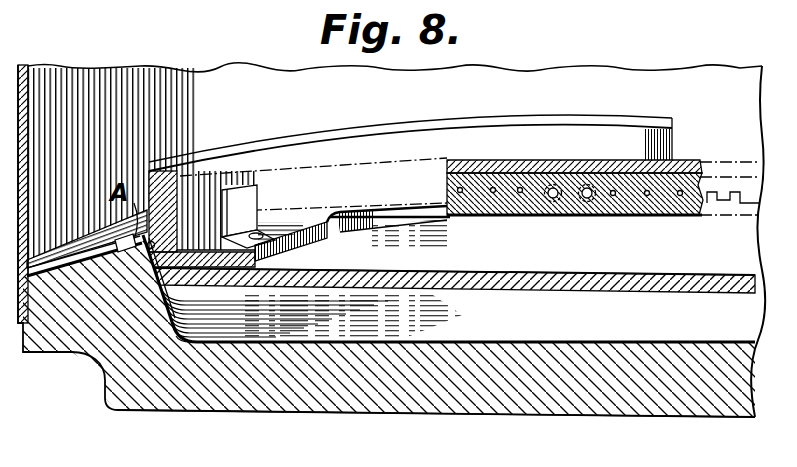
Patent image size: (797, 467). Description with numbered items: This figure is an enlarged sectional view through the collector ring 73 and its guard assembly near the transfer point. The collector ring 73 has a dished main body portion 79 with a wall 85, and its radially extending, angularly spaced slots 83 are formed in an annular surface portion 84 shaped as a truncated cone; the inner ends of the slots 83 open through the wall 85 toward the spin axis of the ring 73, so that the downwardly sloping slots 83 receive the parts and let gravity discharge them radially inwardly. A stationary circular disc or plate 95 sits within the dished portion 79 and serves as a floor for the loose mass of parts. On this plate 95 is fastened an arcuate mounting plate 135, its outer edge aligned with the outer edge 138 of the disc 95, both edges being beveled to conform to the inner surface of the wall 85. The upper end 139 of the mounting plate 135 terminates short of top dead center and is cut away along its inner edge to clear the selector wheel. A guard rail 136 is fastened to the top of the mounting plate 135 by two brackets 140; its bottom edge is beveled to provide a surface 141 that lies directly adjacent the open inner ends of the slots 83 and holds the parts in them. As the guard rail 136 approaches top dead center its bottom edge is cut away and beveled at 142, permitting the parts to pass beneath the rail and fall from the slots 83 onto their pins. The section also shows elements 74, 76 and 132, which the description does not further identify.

The collector ring 73 is at (77, 340).
The hatched strip member 74 is at (653, 217).
The vertical wall 76 is at (44, 67).
The dished main body portion 79 is at (463, 411).
The slots 83 is at (65, 276).
The annular surface portion 84 is at (76, 258).
The wall 85 is at (225, 320).
The circular disc or plate 95 is at (503, 287).
The channel member 132 is at (183, 230).
The mounting plate 135 is at (345, 246).
The guard rail 136 is at (416, 100).
The outer edge 138 is at (153, 290).
The upper end 139 is at (493, 222).
The brackets 140 is at (264, 232).
The beveled surface 141 is at (140, 250).
The cutout portion 142 is at (592, 217).